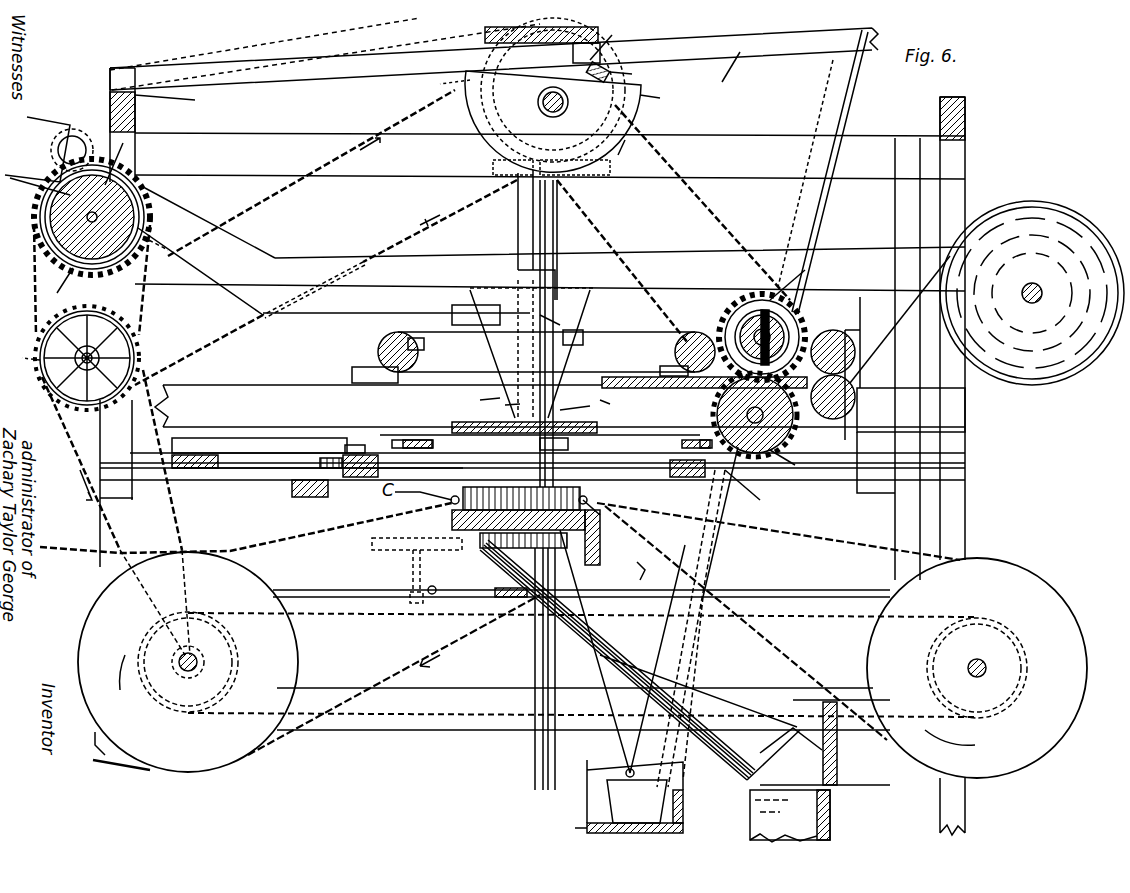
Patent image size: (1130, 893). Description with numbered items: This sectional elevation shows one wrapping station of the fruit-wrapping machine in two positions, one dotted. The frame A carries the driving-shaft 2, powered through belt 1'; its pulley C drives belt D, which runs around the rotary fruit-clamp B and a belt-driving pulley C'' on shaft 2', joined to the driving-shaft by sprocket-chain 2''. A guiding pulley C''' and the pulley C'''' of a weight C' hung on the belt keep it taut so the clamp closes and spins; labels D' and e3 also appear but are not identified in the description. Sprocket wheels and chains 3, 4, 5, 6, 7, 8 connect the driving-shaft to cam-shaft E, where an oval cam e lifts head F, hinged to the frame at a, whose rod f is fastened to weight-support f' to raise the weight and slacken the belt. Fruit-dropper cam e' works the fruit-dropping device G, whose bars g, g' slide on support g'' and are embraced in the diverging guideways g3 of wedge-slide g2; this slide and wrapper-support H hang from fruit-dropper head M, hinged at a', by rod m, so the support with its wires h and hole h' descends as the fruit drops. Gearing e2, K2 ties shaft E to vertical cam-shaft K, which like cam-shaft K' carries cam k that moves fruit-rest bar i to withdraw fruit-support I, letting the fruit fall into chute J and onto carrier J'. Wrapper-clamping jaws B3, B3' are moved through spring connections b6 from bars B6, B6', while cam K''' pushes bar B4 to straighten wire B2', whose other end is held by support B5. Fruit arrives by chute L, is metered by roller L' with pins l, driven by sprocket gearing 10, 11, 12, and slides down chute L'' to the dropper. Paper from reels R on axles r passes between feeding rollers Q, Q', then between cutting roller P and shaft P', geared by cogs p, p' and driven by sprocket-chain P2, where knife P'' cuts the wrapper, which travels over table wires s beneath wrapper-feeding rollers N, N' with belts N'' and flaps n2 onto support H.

The fruit-dropper head M is at (494, 58).
The weight-support head F is at (727, 78).
The rod f is at (823, 172).
The hinge a is at (107, 123).
The frame A is at (135, 108).
The hinge a' is at (172, 96).
The paper reel R is at (1032, 293).
The reel axle r is at (1040, 286).
The cam-shaft E is at (553, 95).
The weight-supporting cam e is at (527, 121).
The fruit-dropper cam e' is at (658, 96).
The gearing e2 is at (619, 72).
The disc pin e3 is at (611, 39).
The gearing K2 is at (493, 168).
The sprocket-chain P2 is at (702, 202).
The rod m is at (518, 222).
The vertical cam-shaft K is at (545, 333).
The fruit-dropping device G is at (580, 312).
The fruit-supporting bar g is at (470, 330).
The fruit-supporting bar g' is at (585, 348).
The support g'' is at (579, 316).
The wedge-slide g2 is at (477, 392).
The guideway g3 is at (546, 402).
The wrapper-feeding roller N' is at (381, 352).
The wrapper-feeding roller N is at (546, 329).
The wrapper-feeding belt N'' is at (669, 339).
The flap n2 is at (697, 355).
The wire s is at (704, 392).
The wrapper-carrying wire h is at (540, 421).
The wrapper-support H is at (575, 406).
The hole h' is at (573, 446).
The paper-cutting shaft P' is at (775, 335).
The paper-cutting knife P'' is at (798, 337).
The cog p' is at (802, 278).
The paper-cutting roller P is at (768, 415).
The cog p is at (788, 456).
The paper-feeding roller Q is at (845, 340).
The paper-feeding roller Q' is at (847, 389).
The chute L is at (77, 196).
The fruit-feeding roller L' is at (108, 217).
The chute L'' is at (206, 251).
The pin l is at (112, 150).
The sprocket-wheel 6 is at (70, 375).
The sprocket-wheel and chain 12 is at (79, 342).
The sprocket-wheel and chain 5 is at (21, 360).
The sprocket-wheel and chain 10 is at (33, 280).
The sprocket-wheel and chain 11 is at (86, 280).
The sprocket-wheel and chain 7 is at (178, 340).
The sprocket-wheel and chain 4 is at (116, 512).
The belt 1' is at (246, 543).
The driving-pulley C is at (188, 662).
The driving-shaft 2 is at (190, 673).
The sprocket-wheel and chain 3 is at (185, 650).
The belt-driving pulley C'' is at (977, 668).
The shaft 2' is at (977, 682).
The sprocket-chain 2'' is at (840, 634).
The belt D is at (567, 630).
The chain D' is at (778, 531).
The fruit-clamp B is at (600, 490).
The weight C' is at (567, 664).
The fruit-support I is at (480, 545).
The vertical cam-shaft K' is at (528, 669).
The chute J is at (633, 660).
The fruit-rest bar i is at (449, 570).
The carrier J' is at (793, 772).
The pulley C'''' is at (616, 662).
The guiding pulley C''' is at (697, 617).
The weight-support f' is at (569, 826).
The cam k is at (641, 573).
The movable wire-support bar B4 is at (195, 468).
The wrapper-clamping wire B2' is at (427, 502).
The movable bar B6 is at (350, 483).
The movable bar B6' is at (498, 481).
The spring connection b6 is at (331, 458).
The cam K''' is at (362, 439).
The wrapper-clamping jaw B3 is at (408, 423).
The wrapper-clamping jaw B3' is at (571, 423).
The wire-support B5 is at (752, 489).
The sprocket-wheel and chain 8 is at (637, 34).